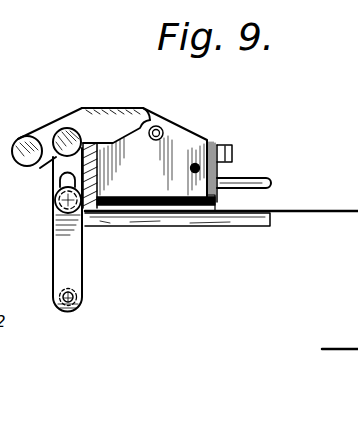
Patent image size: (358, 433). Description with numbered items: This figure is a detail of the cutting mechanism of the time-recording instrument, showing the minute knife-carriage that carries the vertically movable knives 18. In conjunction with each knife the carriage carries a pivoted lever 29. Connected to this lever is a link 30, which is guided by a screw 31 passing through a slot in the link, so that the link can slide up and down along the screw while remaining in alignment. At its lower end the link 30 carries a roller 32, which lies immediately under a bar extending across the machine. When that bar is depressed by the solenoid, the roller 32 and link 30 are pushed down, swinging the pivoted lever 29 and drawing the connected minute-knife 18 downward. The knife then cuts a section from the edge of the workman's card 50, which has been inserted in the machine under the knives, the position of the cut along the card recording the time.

The knives 18 is at (180, 140).
The pivoted lever 29 is at (58, 119).
The link 30 is at (72, 162).
The screw 31 is at (54, 212).
The roller 32 is at (78, 293).
The card 50 is at (322, 210).